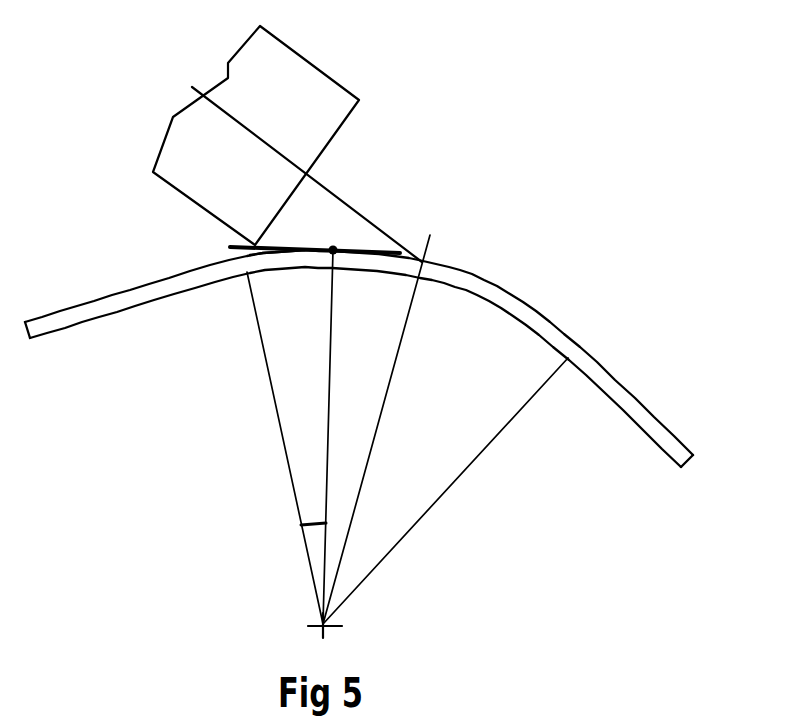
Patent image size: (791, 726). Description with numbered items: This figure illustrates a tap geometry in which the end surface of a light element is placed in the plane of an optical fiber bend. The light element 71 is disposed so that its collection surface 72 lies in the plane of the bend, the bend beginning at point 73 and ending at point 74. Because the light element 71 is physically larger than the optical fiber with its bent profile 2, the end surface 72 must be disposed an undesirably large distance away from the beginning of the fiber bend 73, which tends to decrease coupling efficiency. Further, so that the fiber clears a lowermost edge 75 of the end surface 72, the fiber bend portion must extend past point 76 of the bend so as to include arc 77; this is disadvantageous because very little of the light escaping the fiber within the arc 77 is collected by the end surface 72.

The bent profile 2 is at (497, 286).
The light element 71 is at (318, 86).
The collection surface 72 is at (318, 167).
The beginning of the fiber bend 73 is at (583, 347).
The end point of the bend 74 is at (230, 247).
The lowermost edge 75 is at (270, 250).
The point of the bend 76 is at (336, 253).
The arc 77 is at (310, 524).